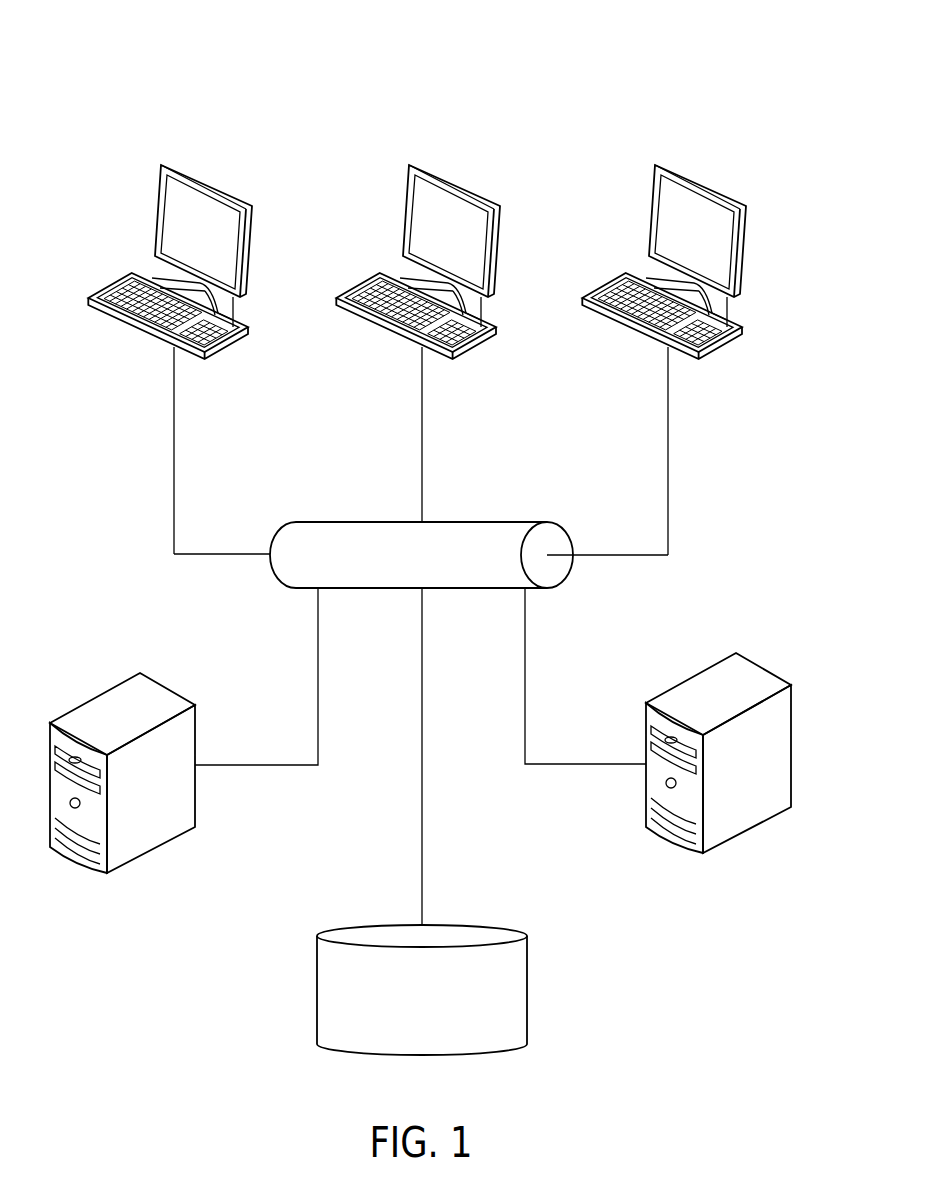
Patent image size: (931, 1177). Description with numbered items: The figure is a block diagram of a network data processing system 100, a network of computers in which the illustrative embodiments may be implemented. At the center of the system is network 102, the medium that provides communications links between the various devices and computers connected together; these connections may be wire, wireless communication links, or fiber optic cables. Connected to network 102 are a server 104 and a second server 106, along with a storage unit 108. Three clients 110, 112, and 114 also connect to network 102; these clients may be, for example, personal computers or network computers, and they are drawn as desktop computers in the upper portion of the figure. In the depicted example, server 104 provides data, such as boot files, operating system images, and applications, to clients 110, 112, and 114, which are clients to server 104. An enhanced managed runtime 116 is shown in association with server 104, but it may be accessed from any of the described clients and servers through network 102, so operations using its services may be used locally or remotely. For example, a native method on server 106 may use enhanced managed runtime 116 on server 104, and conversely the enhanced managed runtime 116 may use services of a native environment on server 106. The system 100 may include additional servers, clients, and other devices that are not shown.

The network data processing system 100 is at (112, 98).
The network 102 is at (507, 522).
The server 104 is at (765, 667).
The server 106 is at (90, 698).
The storage unit 108 is at (317, 982).
The client 110 is at (212, 183).
The client 112 is at (461, 183).
The client 114 is at (706, 183).
The enhanced managed runtime 116 is at (742, 925).